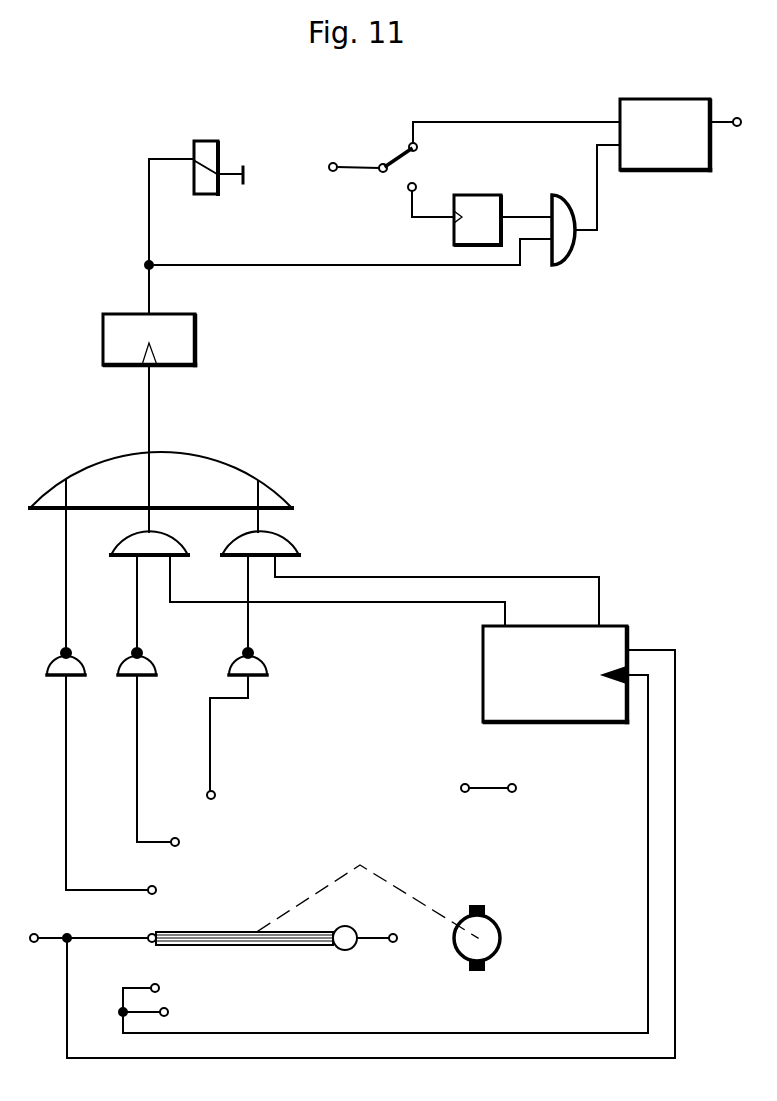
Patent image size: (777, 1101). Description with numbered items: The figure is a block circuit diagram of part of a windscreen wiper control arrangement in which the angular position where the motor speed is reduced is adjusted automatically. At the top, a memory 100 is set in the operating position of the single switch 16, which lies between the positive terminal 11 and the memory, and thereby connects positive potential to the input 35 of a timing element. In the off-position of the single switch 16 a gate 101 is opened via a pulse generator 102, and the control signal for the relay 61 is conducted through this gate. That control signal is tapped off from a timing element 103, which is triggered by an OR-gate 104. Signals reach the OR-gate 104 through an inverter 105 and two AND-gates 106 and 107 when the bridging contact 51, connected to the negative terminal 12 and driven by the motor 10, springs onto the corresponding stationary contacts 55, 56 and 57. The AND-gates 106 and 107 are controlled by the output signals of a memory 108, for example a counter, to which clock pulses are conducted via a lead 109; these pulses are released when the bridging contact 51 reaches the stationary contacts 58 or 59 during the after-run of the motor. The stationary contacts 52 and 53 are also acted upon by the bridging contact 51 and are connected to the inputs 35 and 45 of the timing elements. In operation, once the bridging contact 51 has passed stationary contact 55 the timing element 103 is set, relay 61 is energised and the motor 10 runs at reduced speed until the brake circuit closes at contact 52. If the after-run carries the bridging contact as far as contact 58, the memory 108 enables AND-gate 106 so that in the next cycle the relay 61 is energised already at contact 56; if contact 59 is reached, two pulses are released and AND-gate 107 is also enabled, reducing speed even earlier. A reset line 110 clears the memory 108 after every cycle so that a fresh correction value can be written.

The motor 10 is at (493, 940).
The positive terminal 11 is at (330, 161).
The negative terminal 12 is at (394, 943).
The single switch 16 is at (390, 161).
The input of timing element 35 is at (736, 127).
The input of timing element 45 is at (34, 933).
The bridging contact 51 is at (283, 946).
The stationary contact 52 is at (148, 935).
The stationary contact 53 is at (461, 785).
The stationary contact 55 is at (150, 886).
The stationary contact 56 is at (174, 837).
The stationary contact 57 is at (215, 792).
The stationary contact 58 is at (160, 985).
The stationary contact 59 is at (168, 1012).
The relay 61 is at (208, 152).
The memory 100 is at (668, 108).
The gate 101 is at (566, 246).
The pulse generator 102 is at (484, 208).
The timing element 103 is at (185, 326).
The OR-gate 104 is at (235, 468).
The inverter 105 is at (238, 664).
The AND-gate 106 is at (163, 544).
The AND-gate 107 is at (283, 542).
The memory 108 is at (500, 671).
The lead 109 is at (646, 869).
The reset line 110 is at (673, 876).